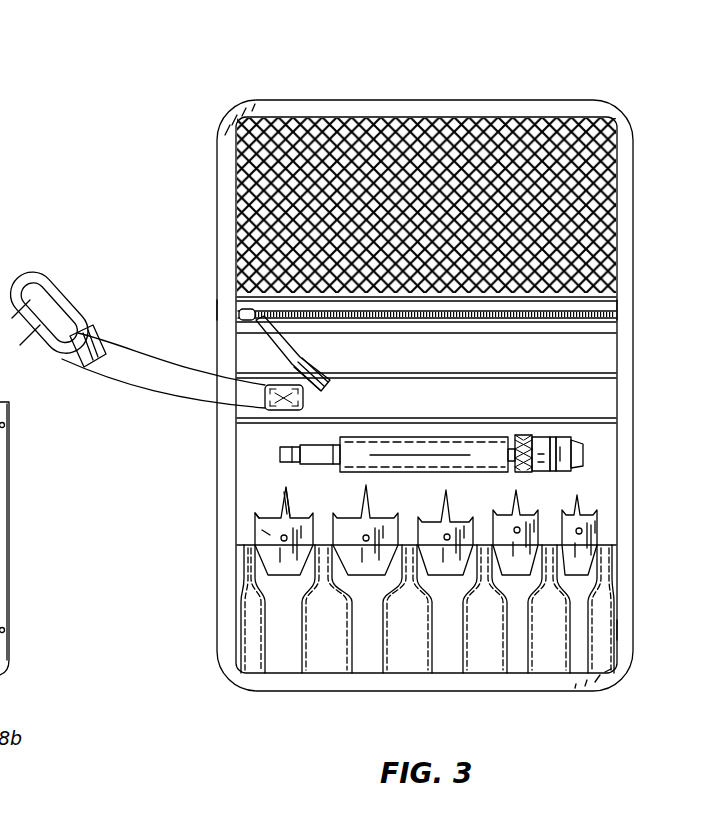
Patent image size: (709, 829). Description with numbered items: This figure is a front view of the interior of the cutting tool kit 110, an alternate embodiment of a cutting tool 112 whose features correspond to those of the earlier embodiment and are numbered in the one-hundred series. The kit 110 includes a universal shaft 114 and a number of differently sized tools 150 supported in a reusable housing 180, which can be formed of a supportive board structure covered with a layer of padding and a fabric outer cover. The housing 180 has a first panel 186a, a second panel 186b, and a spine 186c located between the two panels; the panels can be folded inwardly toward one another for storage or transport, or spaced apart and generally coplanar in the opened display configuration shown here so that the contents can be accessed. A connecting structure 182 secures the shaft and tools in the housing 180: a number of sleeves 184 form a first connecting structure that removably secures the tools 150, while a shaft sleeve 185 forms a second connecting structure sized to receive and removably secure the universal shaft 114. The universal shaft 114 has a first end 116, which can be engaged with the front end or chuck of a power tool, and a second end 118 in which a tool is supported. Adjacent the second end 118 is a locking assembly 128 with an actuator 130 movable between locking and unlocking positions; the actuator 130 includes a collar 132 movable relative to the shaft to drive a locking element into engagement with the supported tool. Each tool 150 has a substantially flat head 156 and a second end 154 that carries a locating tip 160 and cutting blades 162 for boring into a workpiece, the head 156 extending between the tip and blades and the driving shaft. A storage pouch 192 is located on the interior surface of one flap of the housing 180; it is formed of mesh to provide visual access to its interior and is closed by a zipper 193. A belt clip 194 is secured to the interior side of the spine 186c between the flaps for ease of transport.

The cutting tool kit 110 is at (270, 718).
The cutting tool 112 is at (637, 476).
The universal shaft 114 is at (519, 437).
The first end 116 is at (280, 451).
The second end 118 is at (584, 454).
The locking assembly 128 is at (560, 482).
The actuator 130 is at (575, 438).
The collar 132 is at (540, 437).
The tools 150 is at (300, 584).
The second end 154 is at (253, 517).
The head 156 is at (273, 533).
The locating tip 160 is at (285, 494).
The cutting blades 162 is at (282, 518).
The housing 180 is at (409, 97).
The connecting structure 182 is at (446, 450).
The sleeves 184 is at (368, 652).
The shaft sleeve 185 is at (400, 448).
The first panel 186a is at (627, 617).
The second panel 186b is at (622, 208).
The spine 186c is at (512, 390).
The storage pouch 192 is at (262, 240).
The zipper 193 is at (237, 341).
The belt clip 194 is at (40, 270).